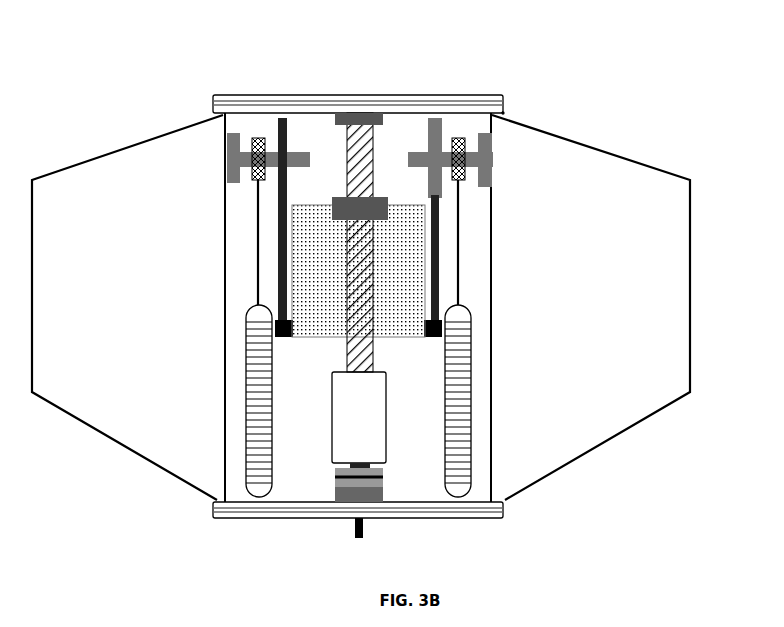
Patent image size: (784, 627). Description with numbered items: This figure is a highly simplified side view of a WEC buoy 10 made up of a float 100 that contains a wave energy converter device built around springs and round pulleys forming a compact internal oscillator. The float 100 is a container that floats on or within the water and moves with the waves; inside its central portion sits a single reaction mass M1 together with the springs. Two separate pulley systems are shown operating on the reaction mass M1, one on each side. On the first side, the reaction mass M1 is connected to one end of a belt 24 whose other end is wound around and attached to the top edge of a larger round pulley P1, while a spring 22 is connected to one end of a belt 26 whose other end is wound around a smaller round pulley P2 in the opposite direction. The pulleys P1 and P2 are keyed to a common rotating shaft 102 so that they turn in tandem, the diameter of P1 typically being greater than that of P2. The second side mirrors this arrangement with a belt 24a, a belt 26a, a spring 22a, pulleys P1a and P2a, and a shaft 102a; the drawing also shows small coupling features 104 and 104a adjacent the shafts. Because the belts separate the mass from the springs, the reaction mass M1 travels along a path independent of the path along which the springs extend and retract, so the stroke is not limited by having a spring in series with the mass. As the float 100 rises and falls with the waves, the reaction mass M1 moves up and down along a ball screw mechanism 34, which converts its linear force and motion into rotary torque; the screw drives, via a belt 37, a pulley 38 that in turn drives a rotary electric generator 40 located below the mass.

The WEC buoy 10 is at (137, 51).
The float 100 is at (665, 232).
The round pulley P1 is at (212, 113).
The round pulley P1a is at (505, 113).
The round pulley P2 is at (240, 152).
The round pulley P2a is at (480, 135).
The shaft 102 is at (230, 155).
The shaft 102a is at (486, 155).
The knurled coupling 104 is at (255, 165).
The knurled coupling (second side) 104a is at (462, 165).
The belt 26 is at (258, 285).
The belt 26a is at (458, 285).
The belt 24 is at (283, 300).
The belt 24a is at (438, 300).
The reaction mass M1 is at (320, 243).
The ball screw mechanism 34 is at (375, 158).
The rotary electric generator 40 is at (360, 410).
The pulley 38 is at (345, 488).
The belt 37 is at (362, 500).
The spring 22 is at (246, 383).
The spring 22a is at (472, 383).